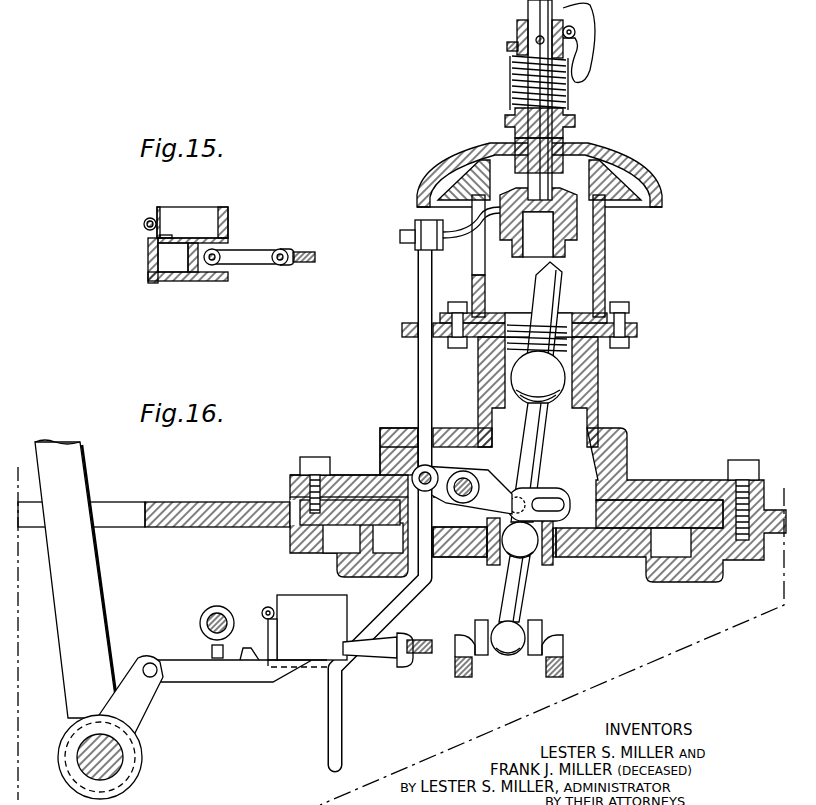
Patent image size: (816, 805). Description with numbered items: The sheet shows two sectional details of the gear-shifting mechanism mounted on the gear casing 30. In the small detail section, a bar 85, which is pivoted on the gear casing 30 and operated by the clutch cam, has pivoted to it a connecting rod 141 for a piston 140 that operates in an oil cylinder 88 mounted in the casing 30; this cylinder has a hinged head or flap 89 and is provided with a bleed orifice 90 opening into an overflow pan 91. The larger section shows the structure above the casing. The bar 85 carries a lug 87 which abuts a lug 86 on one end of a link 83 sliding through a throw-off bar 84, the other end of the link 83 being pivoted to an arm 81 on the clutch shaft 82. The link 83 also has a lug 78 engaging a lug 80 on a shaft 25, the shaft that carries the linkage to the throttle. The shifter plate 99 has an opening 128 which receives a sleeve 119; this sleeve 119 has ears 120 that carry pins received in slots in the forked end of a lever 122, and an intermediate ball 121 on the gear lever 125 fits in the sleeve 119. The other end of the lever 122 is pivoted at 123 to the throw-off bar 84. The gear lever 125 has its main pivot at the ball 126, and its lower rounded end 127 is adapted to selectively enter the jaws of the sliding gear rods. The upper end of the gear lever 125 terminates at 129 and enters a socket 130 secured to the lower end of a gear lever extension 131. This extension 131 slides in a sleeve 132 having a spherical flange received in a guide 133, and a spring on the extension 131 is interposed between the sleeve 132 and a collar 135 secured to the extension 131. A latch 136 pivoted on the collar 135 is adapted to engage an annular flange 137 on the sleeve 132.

In FIG. 16, the shaft 25 is at (200, 625).
In FIG. 16, the gear casing 30 is at (240, 510).
In FIG. 16, the lug 78 is at (247, 645).
In FIG. 16, the lug 80 is at (219, 659).
In FIG. 16, the arm 81 is at (138, 697).
In FIG. 16, the clutch shaft 82 is at (100, 768).
In FIG. 16, the link 83 is at (256, 664).
In FIG. 16, the throw-off bar 84 is at (423, 378).
In FIG. 15, the bar 85 is at (307, 250).
In FIG. 16, the bar 85 is at (425, 654).
In FIG. 16, the lug 86 is at (397, 638).
In FIG. 16, the lug 87 is at (405, 665).
In FIG. 15, the oil cylinder 88 is at (183, 260).
In FIG. 16, the oil cylinder 88 is at (317, 607).
In FIG. 15, the hinged head or flap 89 is at (150, 258).
In FIG. 16, the hinged head or flap 89 is at (273, 643).
In FIG. 15, the bleed orifice 90 is at (172, 236).
In FIG. 15, the overflow pan 91 is at (208, 222).
In FIG. 16, the shifter plate 99 is at (622, 553).
In FIG. 16, the sleeve 119 is at (547, 556).
In FIG. 16, the ears 120 is at (517, 497).
In FIG. 16, the intermediate ball 121 is at (524, 578).
In FIG. 16, the lever 122 is at (453, 557).
In FIG. 16, the pivot 123 is at (418, 475).
In FIG. 16, the gear lever 125 is at (528, 468).
In FIG. 16, the ball 126 is at (555, 378).
In FIG. 16, the lower rounded end 127 is at (510, 645).
In FIG. 16, the opening 128 is at (483, 507).
In FIG. 16, the upper end 129 is at (558, 268).
In FIG. 16, the socket 130 is at (580, 224).
In FIG. 16, the gear lever extension 131 is at (528, 4).
In FIG. 16, the sleeve 132 is at (600, 150).
In FIG. 16, the guide 133 is at (600, 290).
In FIG. 16, the collar 135 is at (507, 46).
In FIG. 16, the latch 136 is at (583, 62).
In FIG. 16, the annular flange 137 is at (576, 120).
In FIG. 15, the piston 140 is at (195, 281).
In FIG. 15, the connecting rod 141 is at (252, 259).